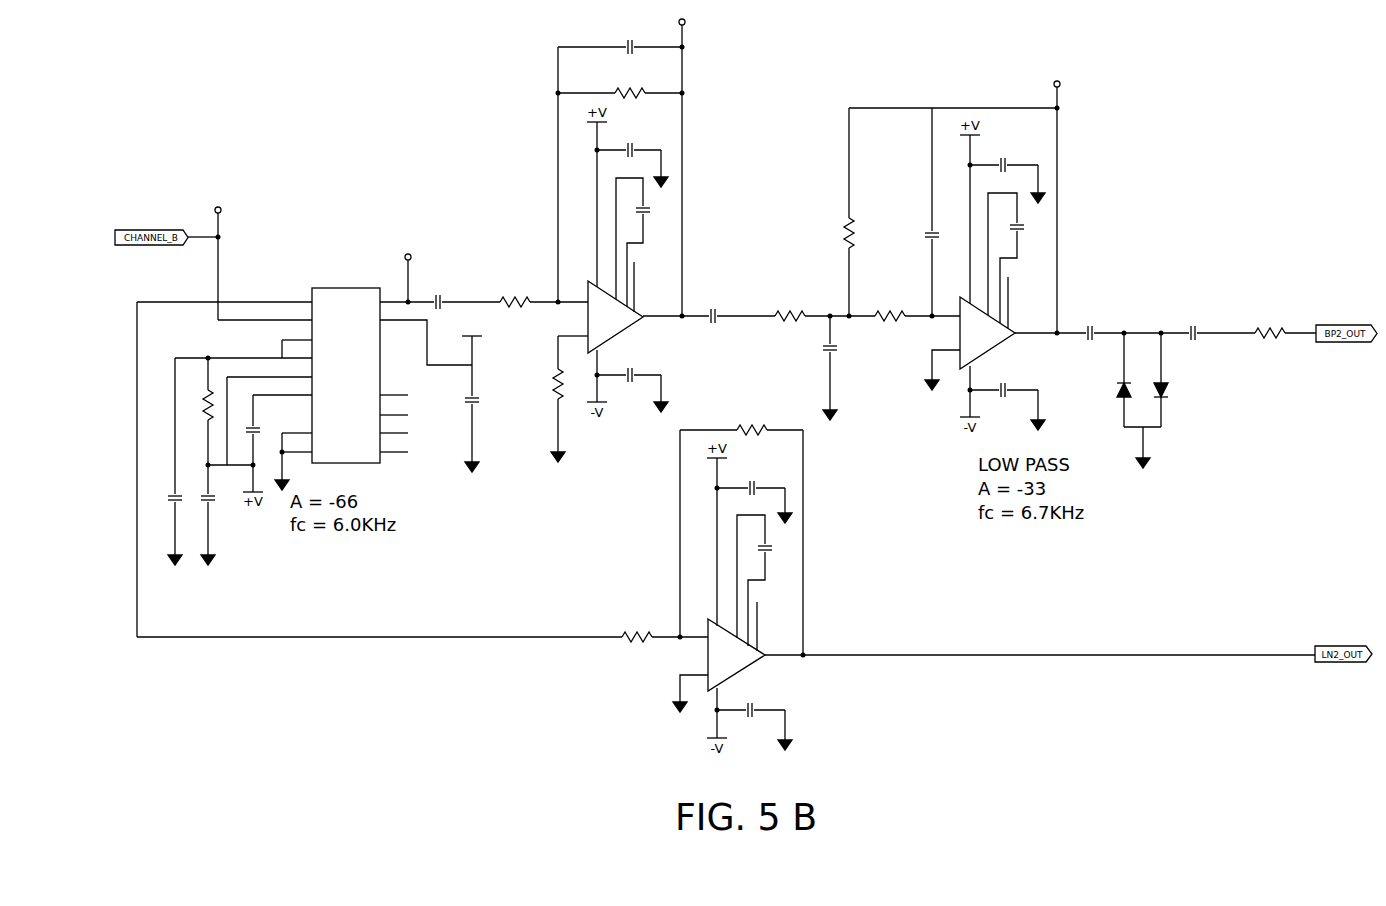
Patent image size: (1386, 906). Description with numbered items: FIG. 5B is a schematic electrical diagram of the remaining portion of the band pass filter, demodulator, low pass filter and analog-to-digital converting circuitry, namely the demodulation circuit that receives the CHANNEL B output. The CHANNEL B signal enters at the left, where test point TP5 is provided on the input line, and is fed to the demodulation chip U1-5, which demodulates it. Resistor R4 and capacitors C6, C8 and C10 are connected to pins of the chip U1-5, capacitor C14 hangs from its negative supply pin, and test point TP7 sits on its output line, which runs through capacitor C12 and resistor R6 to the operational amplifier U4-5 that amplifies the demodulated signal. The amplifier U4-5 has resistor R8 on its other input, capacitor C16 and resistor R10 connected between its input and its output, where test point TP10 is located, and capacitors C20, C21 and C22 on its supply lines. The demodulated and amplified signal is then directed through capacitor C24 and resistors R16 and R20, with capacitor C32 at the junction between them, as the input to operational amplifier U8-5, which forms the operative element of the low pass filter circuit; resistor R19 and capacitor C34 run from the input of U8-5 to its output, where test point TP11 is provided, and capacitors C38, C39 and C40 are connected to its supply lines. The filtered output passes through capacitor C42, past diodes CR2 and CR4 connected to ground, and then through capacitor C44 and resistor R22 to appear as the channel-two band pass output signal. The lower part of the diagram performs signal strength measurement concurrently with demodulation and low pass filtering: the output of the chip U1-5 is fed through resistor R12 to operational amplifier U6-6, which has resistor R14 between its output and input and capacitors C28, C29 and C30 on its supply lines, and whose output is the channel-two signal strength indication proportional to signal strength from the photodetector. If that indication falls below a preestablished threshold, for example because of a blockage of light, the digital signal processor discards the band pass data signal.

The test point 5 TP5 is at (217, 214).
The test point 7 TP7 is at (407, 272).
The test point 10 TP10 is at (681, 24).
The test point 11 TP11 is at (1056, 86).
The demodulation chip U1-5 is at (352, 363).
The operational amplifier U4-5 is at (626, 317).
The operational amplifier U8-5 is at (1009, 333).
The operational amplifier U6 U6-6 is at (756, 655).
The resistor R4 is at (198, 405).
The resistor R6 is at (515, 294).
The resistor R8 is at (548, 399).
The resistor R10 is at (620, 85).
The resistor R12 is at (637, 629).
The resistor R14 is at (741, 422).
The resistor R16 is at (790, 308).
The resistor R19 is at (839, 212).
The resistor R20 is at (890, 308).
The resistor R22 is at (1270, 325).
The capacitor C6 is at (166, 497).
The capacitor C8 is at (199, 497).
The capacitor C10 is at (244, 430).
The capacitor C12 is at (438, 295).
The capacitor C14 is at (464, 395).
The capacitor C16 is at (620, 40).
The capacitor C20 is at (632, 158).
The capacitor C21 is at (633, 245).
The capacitor C22 is at (632, 383).
The capacitor C24 is at (713, 309).
The capacitor C28 is at (754, 495).
The capacitor C29 is at (755, 583).
The capacitor C30 is at (754, 719).
The capacitor C32 is at (821, 368).
The capacitor C34 is at (923, 212).
The capacitor C38 is at (1007, 173).
The capacitor C39 is at (1006, 260).
The capacitor C40 is at (1007, 399).
The capacitor C42 is at (1090, 326).
The capacitor C44 is at (1193, 326).
The diode CR2 is at (1114, 380).
The diode CR4 is at (1151, 380).